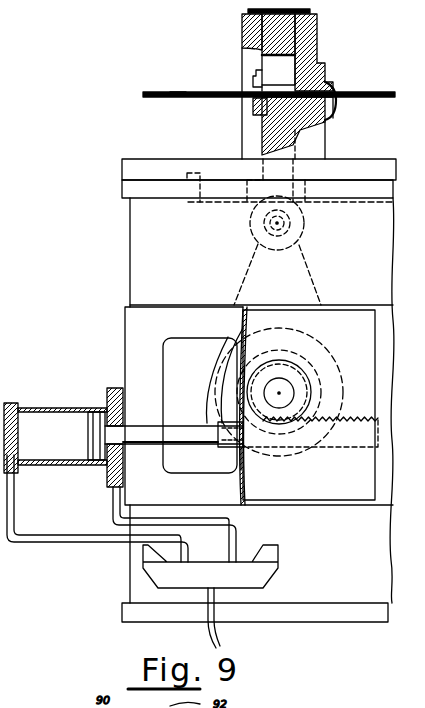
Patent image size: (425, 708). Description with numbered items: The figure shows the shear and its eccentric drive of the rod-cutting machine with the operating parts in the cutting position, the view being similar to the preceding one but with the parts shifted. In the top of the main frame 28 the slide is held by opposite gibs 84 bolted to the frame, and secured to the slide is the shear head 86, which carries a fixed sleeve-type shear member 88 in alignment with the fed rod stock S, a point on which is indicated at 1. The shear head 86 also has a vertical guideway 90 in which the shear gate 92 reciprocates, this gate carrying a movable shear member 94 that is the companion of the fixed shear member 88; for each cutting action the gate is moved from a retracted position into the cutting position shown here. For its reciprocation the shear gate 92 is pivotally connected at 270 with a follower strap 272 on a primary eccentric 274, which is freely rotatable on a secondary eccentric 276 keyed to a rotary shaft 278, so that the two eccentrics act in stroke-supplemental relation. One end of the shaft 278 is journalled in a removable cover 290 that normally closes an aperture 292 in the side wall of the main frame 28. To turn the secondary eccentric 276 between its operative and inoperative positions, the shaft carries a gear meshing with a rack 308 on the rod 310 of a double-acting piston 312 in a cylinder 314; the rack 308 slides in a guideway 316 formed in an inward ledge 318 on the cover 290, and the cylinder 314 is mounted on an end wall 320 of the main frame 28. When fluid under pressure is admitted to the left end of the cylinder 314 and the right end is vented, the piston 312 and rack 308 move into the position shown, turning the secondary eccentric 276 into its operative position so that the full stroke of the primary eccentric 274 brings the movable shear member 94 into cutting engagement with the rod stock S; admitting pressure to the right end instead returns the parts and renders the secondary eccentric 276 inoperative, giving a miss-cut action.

The point on rod 1 is at (178, 92).
The rod stock S is at (359, 97).
The main frame 28 is at (128, 247).
The gibs 84 is at (148, 158).
The shear head 86 is at (318, 40).
The fixed shear die or member 88 is at (326, 76).
The vertical guideway 90 is at (298, 140).
The shear gate 92 is at (263, 127).
The movable shear die or member 94 is at (257, 102).
The pivotal connection 270 is at (304, 222).
The follower strap 272 is at (313, 288).
The primary eccentric 274 is at (313, 345).
The secondary eccentric 276 is at (313, 402).
The rotary shaft 278 is at (285, 398).
The cover 290 is at (258, 320).
The aperture 292 is at (176, 345).
The rack 308 is at (351, 450).
The rod 310 is at (180, 432).
The double-acting piston 312 is at (97, 428).
The cylinder 314 is at (50, 408).
The guideway 316 is at (243, 454).
The inward ledge 318 is at (243, 462).
The end wall 320 is at (126, 353).